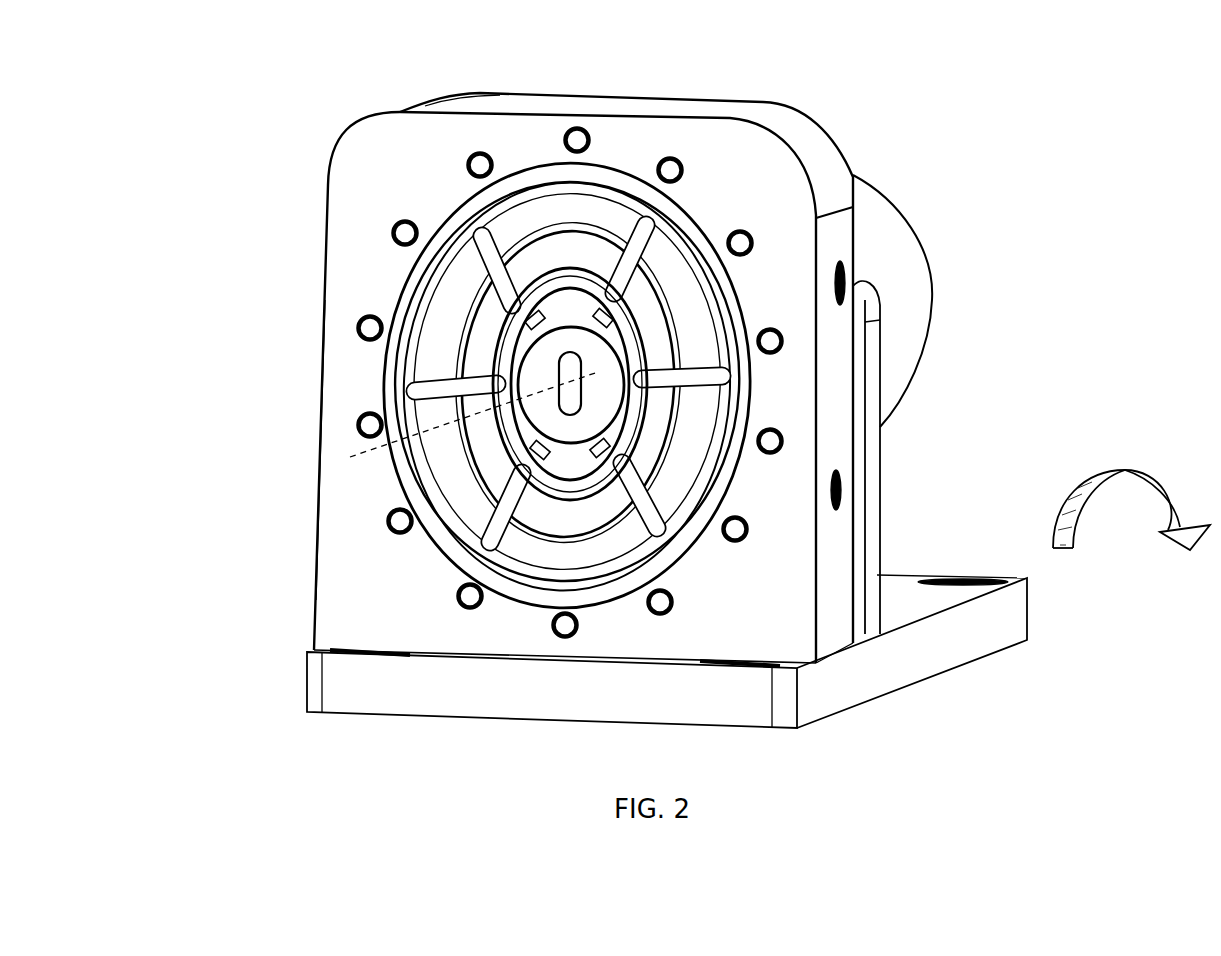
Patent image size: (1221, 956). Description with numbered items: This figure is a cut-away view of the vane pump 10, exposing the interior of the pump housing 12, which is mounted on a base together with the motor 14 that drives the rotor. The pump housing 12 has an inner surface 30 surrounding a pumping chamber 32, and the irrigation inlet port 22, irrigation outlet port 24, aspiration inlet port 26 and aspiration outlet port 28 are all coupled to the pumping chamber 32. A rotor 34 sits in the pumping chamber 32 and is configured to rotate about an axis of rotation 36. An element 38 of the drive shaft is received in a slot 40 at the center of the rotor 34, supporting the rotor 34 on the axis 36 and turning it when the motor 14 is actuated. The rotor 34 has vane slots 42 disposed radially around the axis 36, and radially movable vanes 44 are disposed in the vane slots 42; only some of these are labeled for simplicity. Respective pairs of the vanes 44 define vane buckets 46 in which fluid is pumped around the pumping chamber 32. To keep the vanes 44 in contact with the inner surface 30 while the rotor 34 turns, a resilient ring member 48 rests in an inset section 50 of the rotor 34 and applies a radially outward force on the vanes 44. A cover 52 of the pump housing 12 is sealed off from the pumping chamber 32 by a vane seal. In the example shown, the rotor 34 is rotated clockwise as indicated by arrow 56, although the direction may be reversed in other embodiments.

The vane pump 10 is at (1063, 152).
The pump housing 12 is at (346, 152).
The motor 14 is at (910, 225).
The irrigation inlet port 22 is at (312, 260).
The irrigation outlet port 24 is at (845, 264).
The aspiration inlet port 26 is at (845, 486).
The aspiration outlet port 28 is at (305, 469).
The inner surface 30 is at (477, 518).
The pumping chamber 32 is at (585, 190).
The rotor 34 is at (538, 262).
The axis of rotation 36 is at (352, 437).
The element 38 is at (572, 370).
The slot 40 is at (586, 396).
The vane slots 42 is at (652, 277).
The vanes 44 is at (497, 277).
The vane buckets 46 is at (567, 552).
The resilient ring member 48 is at (648, 345).
The inset sections 50 is at (655, 326).
The cover 52 is at (540, 256).
The arrow 56 is at (1128, 468).